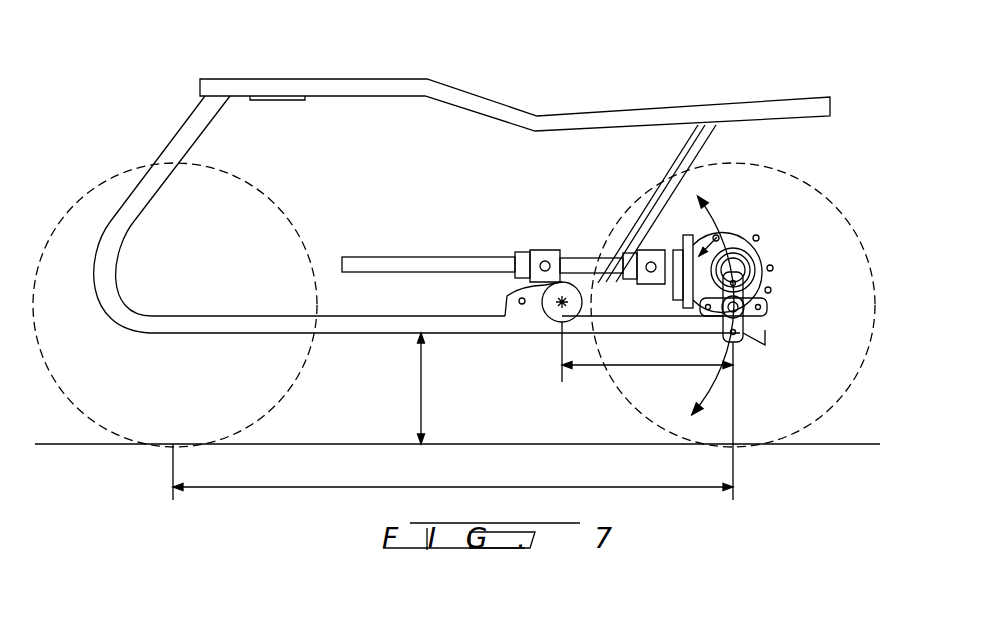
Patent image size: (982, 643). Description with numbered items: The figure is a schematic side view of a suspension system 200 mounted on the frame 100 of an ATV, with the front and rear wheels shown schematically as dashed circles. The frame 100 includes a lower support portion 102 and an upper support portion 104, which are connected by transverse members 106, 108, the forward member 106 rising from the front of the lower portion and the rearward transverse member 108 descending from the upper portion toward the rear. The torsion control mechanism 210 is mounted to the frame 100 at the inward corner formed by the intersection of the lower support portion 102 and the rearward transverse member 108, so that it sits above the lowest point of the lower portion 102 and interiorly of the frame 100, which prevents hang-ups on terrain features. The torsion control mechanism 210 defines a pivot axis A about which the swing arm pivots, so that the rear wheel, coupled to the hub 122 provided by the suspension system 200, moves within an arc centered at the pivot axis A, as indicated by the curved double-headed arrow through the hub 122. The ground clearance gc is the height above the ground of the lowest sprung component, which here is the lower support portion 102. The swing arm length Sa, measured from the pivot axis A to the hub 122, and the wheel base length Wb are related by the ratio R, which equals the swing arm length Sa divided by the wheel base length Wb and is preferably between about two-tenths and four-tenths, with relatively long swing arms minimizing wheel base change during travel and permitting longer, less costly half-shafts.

The frame 100 is at (508, 52).
The lower support portion 102 is at (255, 322).
The upper support portion 104 is at (296, 82).
The transverse member 106 is at (196, 129).
The rearward transverse member 108 is at (702, 153).
The hub 122 is at (747, 332).
The suspension system 200 is at (833, 180).
The torsion control mechanism 210 is at (577, 270).
The pivot axis A is at (545, 285).
The ratio of swing arm length to wheel base length R is at (762, 323).
The swing arm length Sa is at (647, 383).
The ground clearance gc is at (438, 388).
The wheel base length Wb is at (453, 472).